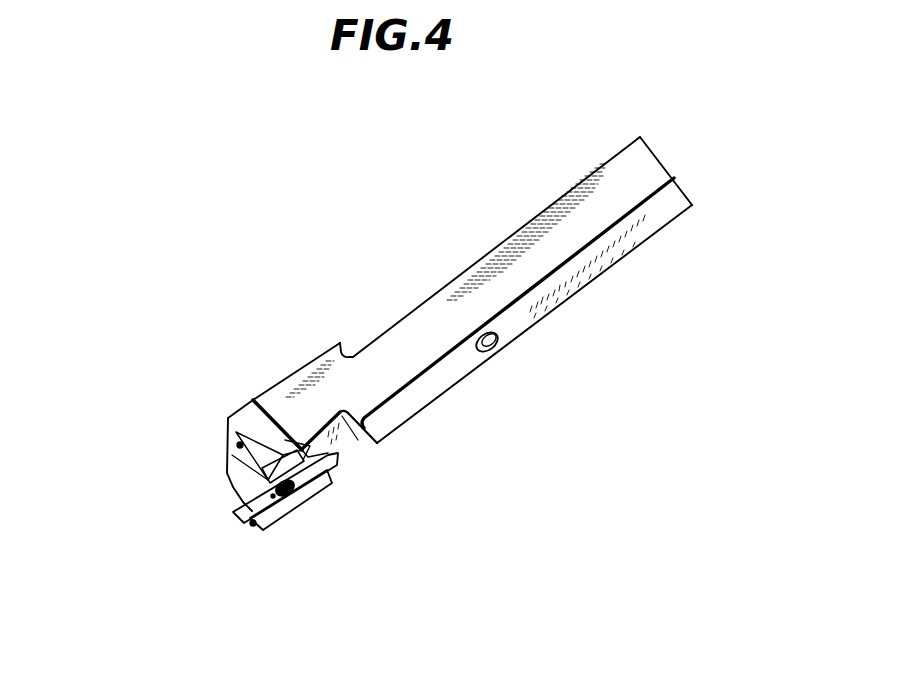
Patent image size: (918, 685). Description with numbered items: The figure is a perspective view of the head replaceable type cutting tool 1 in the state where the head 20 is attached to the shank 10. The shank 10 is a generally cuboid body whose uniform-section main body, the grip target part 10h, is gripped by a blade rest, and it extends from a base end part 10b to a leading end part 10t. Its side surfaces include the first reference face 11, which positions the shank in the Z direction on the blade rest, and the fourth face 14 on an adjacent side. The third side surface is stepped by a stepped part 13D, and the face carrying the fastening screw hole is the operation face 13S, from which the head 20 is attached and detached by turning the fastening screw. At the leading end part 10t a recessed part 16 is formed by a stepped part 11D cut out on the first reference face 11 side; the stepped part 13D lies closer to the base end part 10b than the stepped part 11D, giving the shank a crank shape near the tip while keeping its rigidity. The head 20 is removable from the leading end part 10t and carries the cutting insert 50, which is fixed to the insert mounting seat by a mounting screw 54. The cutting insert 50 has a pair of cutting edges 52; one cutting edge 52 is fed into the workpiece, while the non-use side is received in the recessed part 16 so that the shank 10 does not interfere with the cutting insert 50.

The head replaceable type cutting tool 1 is at (133, 225).
The shank 10 is at (650, 222).
The base end part 10b is at (617, 133).
The grip target part 10h is at (437, 320).
The leading end part 10t is at (240, 355).
The first reference face 11 is at (523, 322).
The stepped part 11D is at (380, 457).
The stepped part 13D is at (342, 330).
The operation face 13S is at (300, 365).
The fourth face 14 is at (463, 290).
The recessed part 16 is at (378, 488).
The head 20 is at (238, 418).
The cutting insert 50 is at (283, 508).
The cutting edge 52 is at (237, 516).
The mounting screw 54 is at (290, 498).